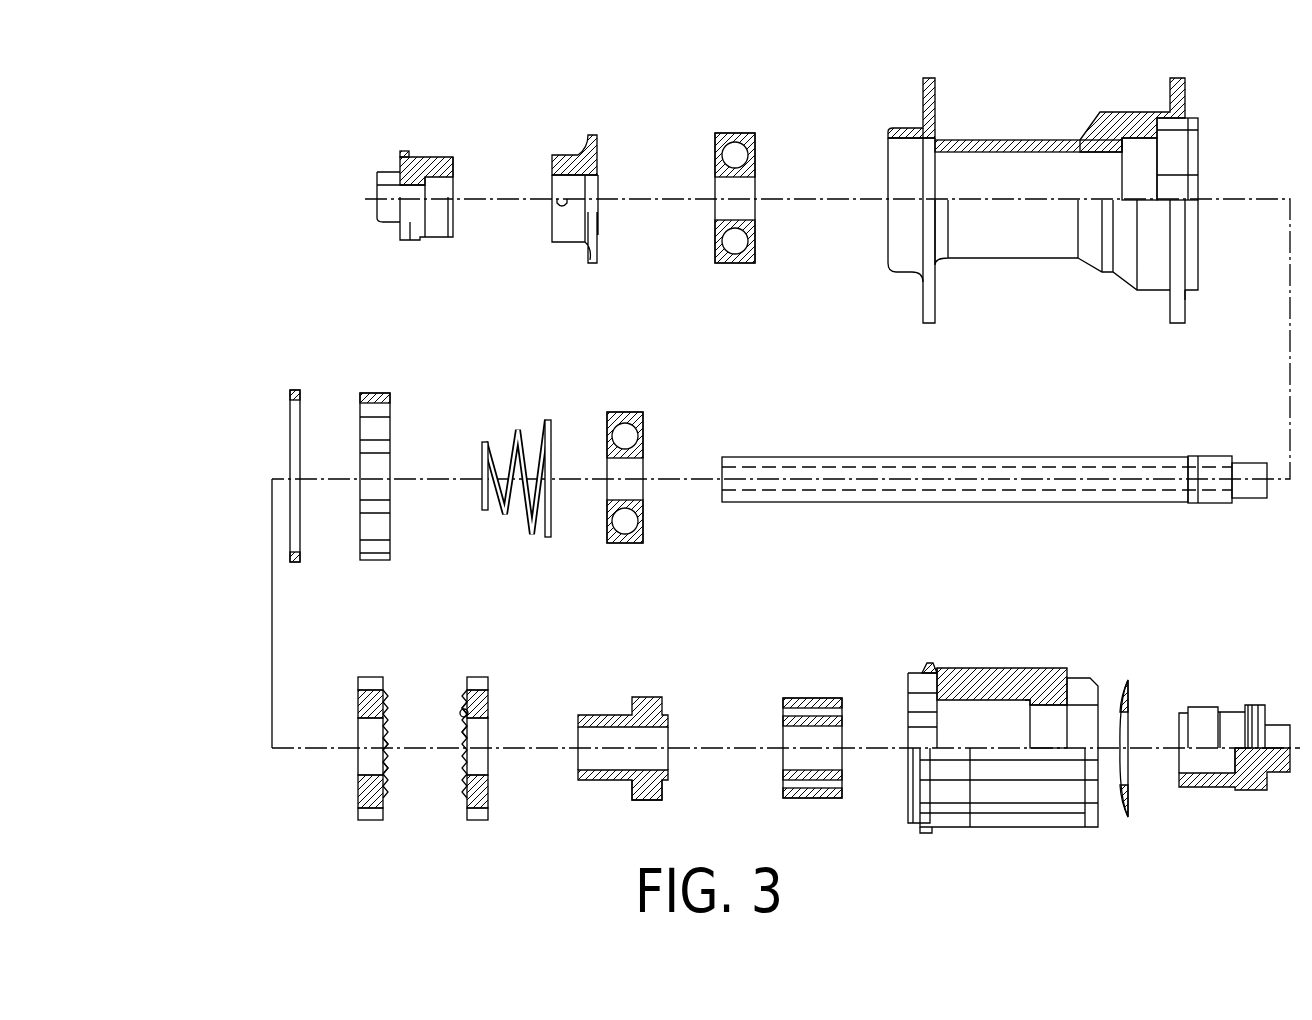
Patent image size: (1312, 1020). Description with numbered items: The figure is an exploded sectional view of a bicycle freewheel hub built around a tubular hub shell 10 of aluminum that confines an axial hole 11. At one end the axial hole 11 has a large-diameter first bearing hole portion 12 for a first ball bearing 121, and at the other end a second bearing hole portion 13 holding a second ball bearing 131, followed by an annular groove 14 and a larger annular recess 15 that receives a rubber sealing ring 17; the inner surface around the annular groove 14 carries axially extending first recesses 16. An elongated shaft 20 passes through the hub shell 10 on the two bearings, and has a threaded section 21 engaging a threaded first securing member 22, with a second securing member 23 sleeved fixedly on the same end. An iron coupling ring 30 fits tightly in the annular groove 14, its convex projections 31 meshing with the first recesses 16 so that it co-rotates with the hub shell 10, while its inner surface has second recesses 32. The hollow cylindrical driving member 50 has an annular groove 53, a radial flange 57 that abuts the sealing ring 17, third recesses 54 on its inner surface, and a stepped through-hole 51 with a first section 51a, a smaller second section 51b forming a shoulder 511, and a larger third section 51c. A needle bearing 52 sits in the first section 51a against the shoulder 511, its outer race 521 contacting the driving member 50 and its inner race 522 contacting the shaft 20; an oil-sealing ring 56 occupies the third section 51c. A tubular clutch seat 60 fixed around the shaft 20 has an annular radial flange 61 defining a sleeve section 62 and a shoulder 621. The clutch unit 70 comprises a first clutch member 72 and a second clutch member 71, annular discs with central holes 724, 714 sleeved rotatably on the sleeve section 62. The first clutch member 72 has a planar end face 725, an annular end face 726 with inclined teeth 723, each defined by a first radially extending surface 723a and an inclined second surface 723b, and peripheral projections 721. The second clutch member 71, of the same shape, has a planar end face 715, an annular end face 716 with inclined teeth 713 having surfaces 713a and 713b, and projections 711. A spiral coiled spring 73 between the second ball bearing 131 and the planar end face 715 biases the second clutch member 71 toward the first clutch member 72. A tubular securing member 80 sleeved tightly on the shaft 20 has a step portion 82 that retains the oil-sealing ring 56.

The tubular hub shell 10 is at (1057, 193).
The axial hole 11 is at (1020, 165).
The first bearing hole portion 12 is at (897, 160).
The second bearing hole portion 13 is at (1133, 160).
The annular groove 14 is at (1175, 115).
The annular recess 15 is at (1192, 125).
The first recesses 16 is at (1175, 130).
The sealing ring 17 is at (295, 390).
The shaft 20 is at (994, 440).
The threaded section 21 is at (1205, 457).
The first securing member 22 is at (566, 157).
The second securing member 23 is at (428, 158).
The coupling ring 30 is at (401, 441).
The projections 31 is at (370, 394).
The second recesses 32 is at (382, 410).
The driving member 50 is at (994, 724).
The stepped through-hole 51 is at (1015, 731).
The first section 51a is at (990, 740).
The second section 51b is at (1050, 740).
The third section 51c is at (1082, 695).
The shoulder 511 is at (1032, 700).
The needle bearing 52 is at (797, 700).
The outer race 521 is at (798, 698).
The inner race 522 is at (785, 720).
The annular groove 53 is at (943, 680).
The third recesses 54 is at (916, 690).
The oil-sealing ring 56 is at (1124, 685).
The radial flange 57 is at (927, 665).
The tubular clutch seat 60 is at (641, 721).
The annular radial flange 61 is at (655, 700).
The sleeve section 62 is at (612, 713).
The shoulder 621 is at (632, 792).
The clutch unit 70 is at (415, 702).
The second clutch member 71 is at (313, 719).
The projections 711 is at (362, 677).
The inclined teeth 713 is at (290, 747).
The first radially extending surface 713a is at (382, 752).
The inclined second surface 713b is at (383, 775).
The central hole 714 is at (365, 727).
The planar end face 715 is at (360, 800).
The annular end face 716 is at (385, 798).
The first clutch member 72 is at (536, 724).
The projections 721 is at (478, 677).
The inclined teeth 723 is at (548, 724).
The first radially extending surface 723a is at (470, 735).
The inclined second surface 723b is at (475, 705).
The central hole 724 is at (490, 768).
The planar end face 725 is at (490, 797).
The annular end face 726 is at (463, 800).
The spiral coiled spring 73 is at (517, 435).
The tubular securing member 80 is at (1234, 707).
The step portion 82 is at (1216, 710).
The first ball bearing 121 is at (735, 133).
The second ball bearing 131 is at (628, 412).